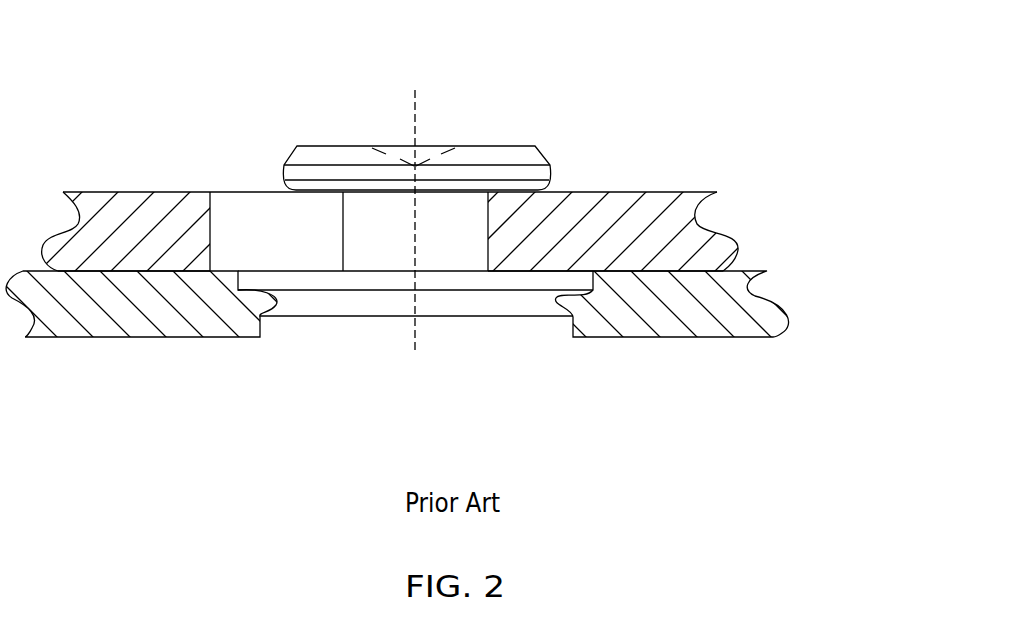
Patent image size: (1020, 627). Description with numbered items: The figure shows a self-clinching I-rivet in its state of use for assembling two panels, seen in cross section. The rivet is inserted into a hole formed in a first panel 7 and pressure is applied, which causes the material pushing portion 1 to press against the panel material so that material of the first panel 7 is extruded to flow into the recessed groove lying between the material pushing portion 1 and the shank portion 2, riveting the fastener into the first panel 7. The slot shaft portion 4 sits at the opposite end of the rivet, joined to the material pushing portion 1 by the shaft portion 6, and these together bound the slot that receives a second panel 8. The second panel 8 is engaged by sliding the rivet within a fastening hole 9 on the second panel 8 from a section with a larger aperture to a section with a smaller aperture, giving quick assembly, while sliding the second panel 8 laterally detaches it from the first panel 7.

The material pushing portion 1 is at (263, 283).
The shank portion 2 is at (372, 302).
The slot shaft portion 4 is at (335, 158).
The shaft portion 6 is at (370, 240).
The first panel 7 is at (657, 223).
The second panel 8 is at (677, 315).
The fastening hole 9 is at (233, 228).